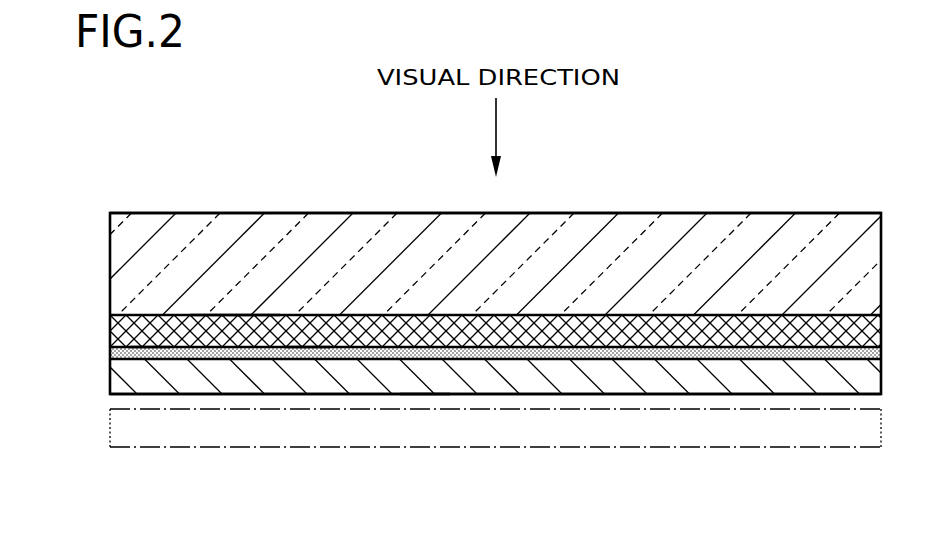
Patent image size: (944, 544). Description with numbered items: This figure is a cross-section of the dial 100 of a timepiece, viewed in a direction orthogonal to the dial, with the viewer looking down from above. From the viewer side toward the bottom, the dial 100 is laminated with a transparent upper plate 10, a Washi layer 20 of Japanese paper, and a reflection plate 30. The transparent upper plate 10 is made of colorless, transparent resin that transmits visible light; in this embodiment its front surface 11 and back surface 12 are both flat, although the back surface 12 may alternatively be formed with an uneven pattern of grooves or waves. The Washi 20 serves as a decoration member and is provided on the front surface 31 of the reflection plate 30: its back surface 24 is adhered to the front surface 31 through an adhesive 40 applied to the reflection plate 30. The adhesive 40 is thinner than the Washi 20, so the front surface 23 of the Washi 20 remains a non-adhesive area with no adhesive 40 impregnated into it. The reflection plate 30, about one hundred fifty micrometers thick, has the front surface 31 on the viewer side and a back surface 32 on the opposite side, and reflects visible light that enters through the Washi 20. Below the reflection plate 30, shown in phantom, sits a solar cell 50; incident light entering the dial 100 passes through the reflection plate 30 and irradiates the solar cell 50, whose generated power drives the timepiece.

The dial 100 is at (866, 211).
The transparent upper plate 10 is at (110, 263).
The front surface 11 is at (155, 213).
The back surface 12 is at (259, 318).
The Washi layer 20 is at (110, 336).
The front surface 23 is at (197, 315).
The back surface 24 is at (147, 347).
The adhesive 40 is at (110, 352).
The reflection plate 30 is at (110, 378).
The front surface 31 is at (302, 347).
The back surface 32 is at (422, 394).
The solar cell 50 is at (852, 448).